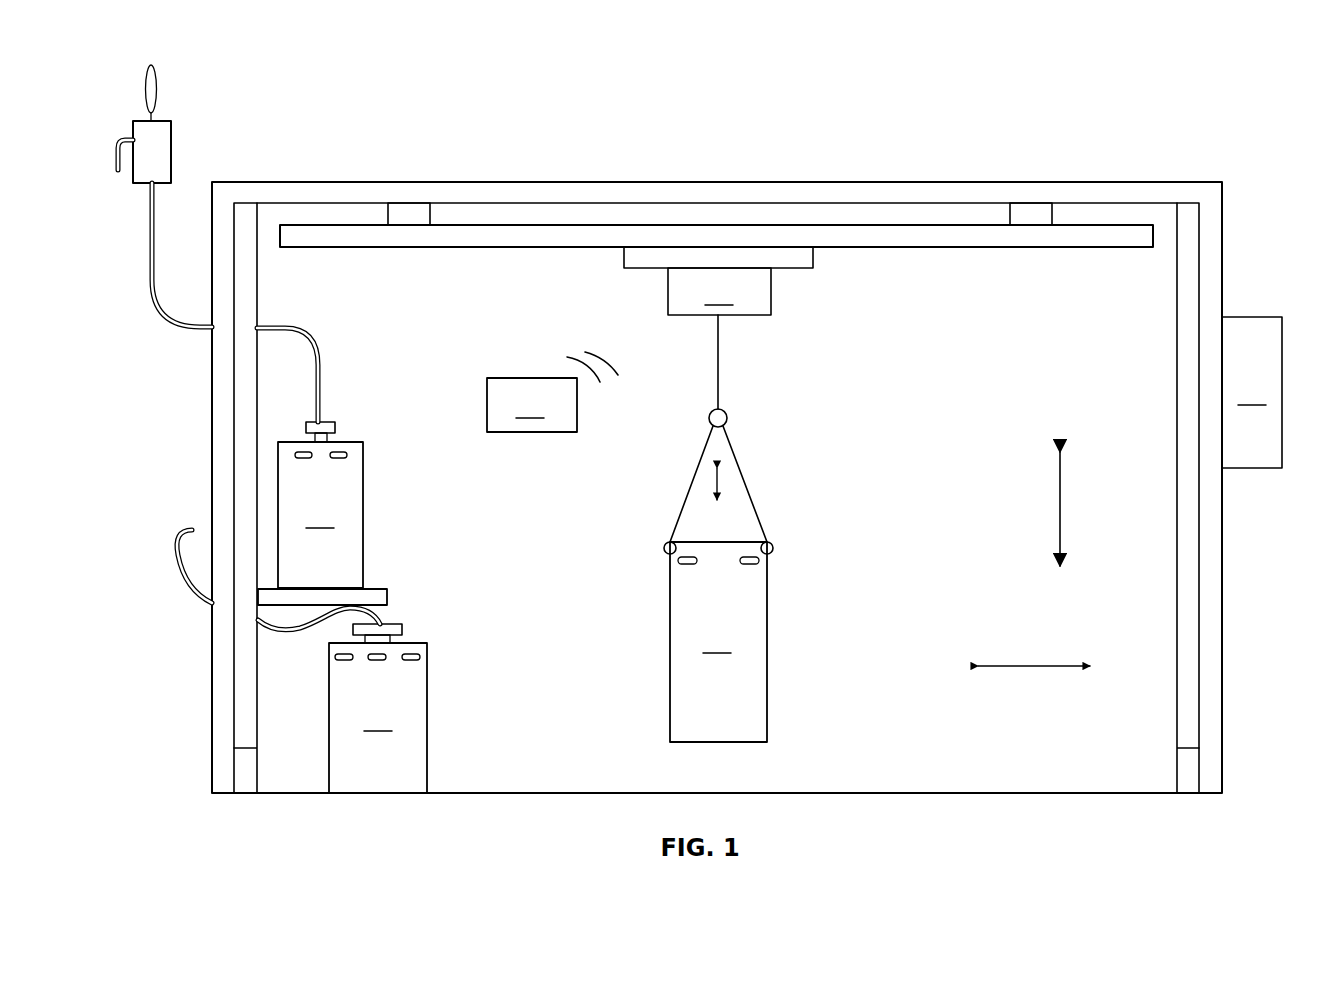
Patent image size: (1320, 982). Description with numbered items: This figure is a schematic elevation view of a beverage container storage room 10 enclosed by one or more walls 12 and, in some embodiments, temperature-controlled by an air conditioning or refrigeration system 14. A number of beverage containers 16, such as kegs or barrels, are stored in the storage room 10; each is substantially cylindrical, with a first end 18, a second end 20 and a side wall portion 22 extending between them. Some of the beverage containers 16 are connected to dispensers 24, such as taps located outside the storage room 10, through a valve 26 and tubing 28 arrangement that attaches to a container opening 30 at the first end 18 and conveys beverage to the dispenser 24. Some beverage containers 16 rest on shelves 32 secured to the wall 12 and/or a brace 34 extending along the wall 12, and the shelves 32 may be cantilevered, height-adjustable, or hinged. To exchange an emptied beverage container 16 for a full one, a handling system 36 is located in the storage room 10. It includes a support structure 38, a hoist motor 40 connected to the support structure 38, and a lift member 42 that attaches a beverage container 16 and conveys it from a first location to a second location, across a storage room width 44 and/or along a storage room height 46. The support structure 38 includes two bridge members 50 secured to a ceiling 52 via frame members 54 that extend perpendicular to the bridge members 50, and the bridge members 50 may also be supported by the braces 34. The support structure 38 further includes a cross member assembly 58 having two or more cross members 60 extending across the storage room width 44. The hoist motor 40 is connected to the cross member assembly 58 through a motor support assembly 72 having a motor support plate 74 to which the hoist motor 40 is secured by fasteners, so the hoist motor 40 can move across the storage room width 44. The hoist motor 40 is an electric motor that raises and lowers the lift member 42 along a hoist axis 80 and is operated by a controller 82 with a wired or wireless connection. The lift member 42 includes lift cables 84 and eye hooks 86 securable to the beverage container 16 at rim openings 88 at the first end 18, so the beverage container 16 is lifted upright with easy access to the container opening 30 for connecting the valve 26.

The beverage container storage room 10 is at (990, 140).
The wall 12 is at (210, 387).
The air conditioning or refrigeration system 14 is at (1252, 392).
The beverage container 16 is at (550, 617).
The first end 18 is at (741, 526).
The second end 20 is at (755, 743).
The side wall portion 22 is at (746, 658).
The dispenser 24 is at (147, 118).
The valve 26 is at (332, 421).
The tubing 28 is at (148, 222).
The container opening 30 is at (333, 438).
The shelf 32 is at (375, 588).
The brace 34 is at (240, 456).
The handling system 36 is at (770, 428).
The support structure 38 is at (910, 249).
The hoist motor 40 is at (719, 291).
The lift member 42 is at (728, 408).
The storage room width 44 is at (1010, 660).
The storage room height 46 is at (1060, 482).
The bridge member 50 is at (405, 213).
The ceiling 52 is at (460, 183).
The frame member 54 is at (527, 188).
The cross member assembly 58 is at (308, 222).
The cross member 60 is at (1036, 240).
The motor support assembly 72 is at (744, 288).
The motor support plate 74 is at (815, 262).
The hoist axis 80 is at (722, 477).
The controller 82 is at (552, 392).
The lift cable 84 is at (717, 360).
The eye hook 86 is at (664, 546).
The rim opening 88 is at (688, 568).